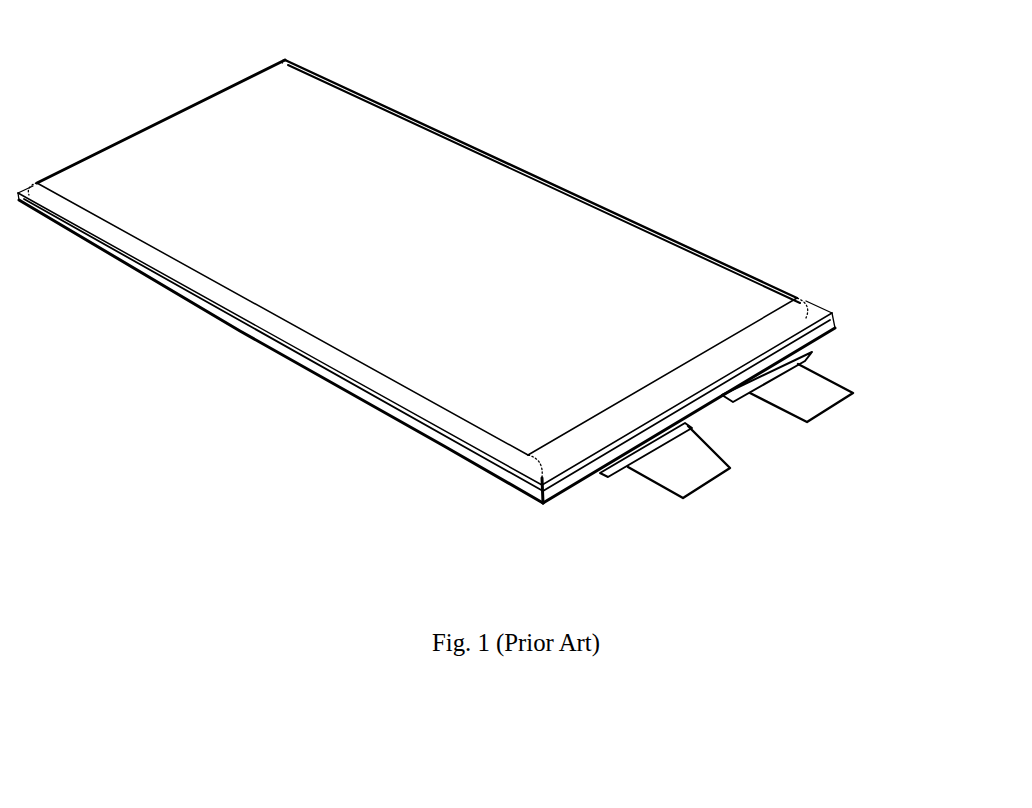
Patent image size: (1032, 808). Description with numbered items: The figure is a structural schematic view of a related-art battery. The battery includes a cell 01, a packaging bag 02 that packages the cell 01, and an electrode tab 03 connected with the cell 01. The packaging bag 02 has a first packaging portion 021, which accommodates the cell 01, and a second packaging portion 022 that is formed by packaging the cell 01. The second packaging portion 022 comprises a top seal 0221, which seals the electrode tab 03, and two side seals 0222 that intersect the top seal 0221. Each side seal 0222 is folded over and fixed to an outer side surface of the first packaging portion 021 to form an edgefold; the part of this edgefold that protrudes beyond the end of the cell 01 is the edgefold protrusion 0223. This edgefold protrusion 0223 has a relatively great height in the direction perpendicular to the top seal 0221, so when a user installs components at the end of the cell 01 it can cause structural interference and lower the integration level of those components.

The cell 01 is at (417, 245).
The first packaging portion 021 is at (452, 175).
The packaging bag 02 is at (476, 369).
The second packaging portion 022 is at (557, 485).
The top seal 0221 is at (690, 395).
The side seal 0222 is at (444, 447).
The edgefold protrusion 0223 is at (818, 305).
The electrode tab 03 is at (695, 470).